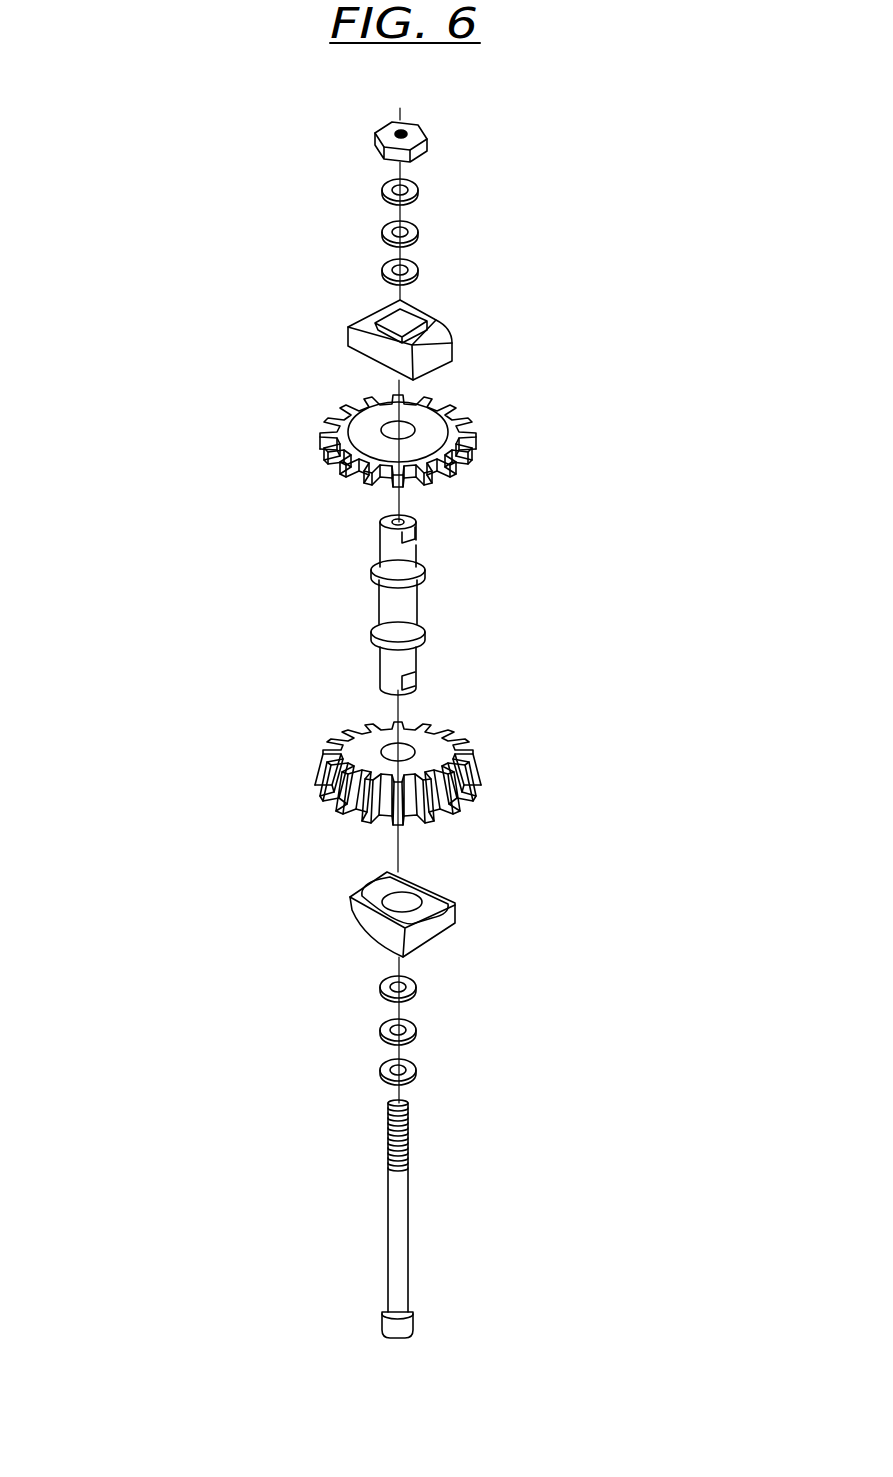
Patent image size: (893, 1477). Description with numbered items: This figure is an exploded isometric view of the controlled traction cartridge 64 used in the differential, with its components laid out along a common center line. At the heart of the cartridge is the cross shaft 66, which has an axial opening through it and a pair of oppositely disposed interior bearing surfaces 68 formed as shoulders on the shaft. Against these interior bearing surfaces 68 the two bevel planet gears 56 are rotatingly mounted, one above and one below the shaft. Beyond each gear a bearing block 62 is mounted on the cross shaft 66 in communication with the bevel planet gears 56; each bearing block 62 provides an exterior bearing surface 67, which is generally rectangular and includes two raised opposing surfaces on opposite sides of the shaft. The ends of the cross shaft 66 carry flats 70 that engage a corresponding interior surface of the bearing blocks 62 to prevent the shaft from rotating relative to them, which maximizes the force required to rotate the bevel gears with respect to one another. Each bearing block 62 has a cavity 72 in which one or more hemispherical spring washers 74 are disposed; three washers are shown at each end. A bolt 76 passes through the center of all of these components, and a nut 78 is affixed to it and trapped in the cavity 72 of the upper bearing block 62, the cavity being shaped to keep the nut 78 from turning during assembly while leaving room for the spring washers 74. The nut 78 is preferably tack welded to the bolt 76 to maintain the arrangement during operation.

The controlled traction cartridge 64 is at (131, 582).
The nut 78 is at (380, 139).
The hemispherical spring washers 74 is at (344, 173).
The cavity 72 is at (417, 318).
The bearing blocks 62 is at (437, 338).
The bevel planet gears 56 is at (435, 428).
The flats 70 is at (413, 533).
The cross shaft 66 is at (423, 593).
The interior bearing surfaces 68 is at (423, 573).
The exterior bearing surface 67 is at (453, 905).
The bolt 76 is at (402, 1240).